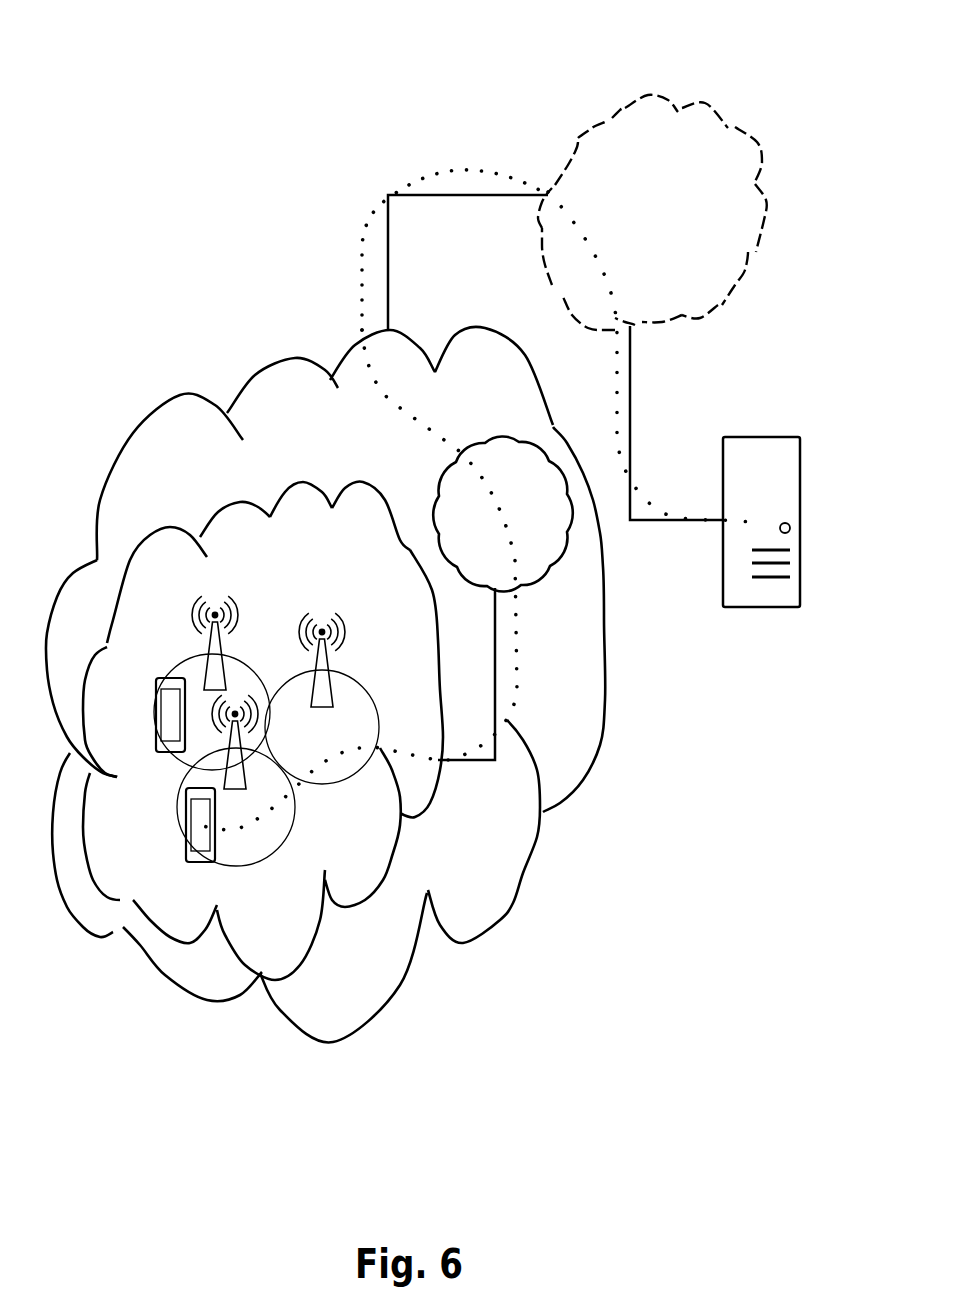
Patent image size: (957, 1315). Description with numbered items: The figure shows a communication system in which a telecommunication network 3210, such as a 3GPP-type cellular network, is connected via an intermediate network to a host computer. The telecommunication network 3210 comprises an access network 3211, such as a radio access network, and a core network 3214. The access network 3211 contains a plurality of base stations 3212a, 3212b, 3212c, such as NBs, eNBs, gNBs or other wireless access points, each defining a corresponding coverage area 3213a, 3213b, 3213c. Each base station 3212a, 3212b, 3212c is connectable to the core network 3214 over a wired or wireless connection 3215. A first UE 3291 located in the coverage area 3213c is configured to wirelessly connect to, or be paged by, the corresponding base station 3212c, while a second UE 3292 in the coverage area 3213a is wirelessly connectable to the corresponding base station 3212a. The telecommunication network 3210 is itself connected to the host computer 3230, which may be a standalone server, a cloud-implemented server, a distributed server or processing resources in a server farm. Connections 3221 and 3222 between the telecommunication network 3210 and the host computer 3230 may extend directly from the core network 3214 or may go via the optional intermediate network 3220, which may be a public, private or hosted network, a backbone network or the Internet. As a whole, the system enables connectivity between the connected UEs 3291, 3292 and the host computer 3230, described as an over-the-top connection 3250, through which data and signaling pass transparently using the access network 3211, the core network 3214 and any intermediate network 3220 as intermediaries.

The telecommunication network 3210 is at (352, 420).
The access network 3211 is at (309, 560).
The base station 3212a is at (243, 765).
The base station 3212b is at (343, 638).
The base station 3212c is at (186, 605).
The coverage area 3213a is at (268, 760).
The coverage area 3213b is at (380, 745).
The coverage area 3213c is at (178, 672).
The core network 3214 is at (572, 527).
The wired or wireless connection 3215 is at (498, 643).
The intermediate network 3220 is at (677, 222).
The connection 3221 is at (465, 195).
The connection 3222 is at (675, 528).
The host computer 3230 is at (761, 542).
The OTT connection 3250 is at (368, 230).
The first UE 3291 is at (156, 750).
The second UE 3292 is at (186, 790).